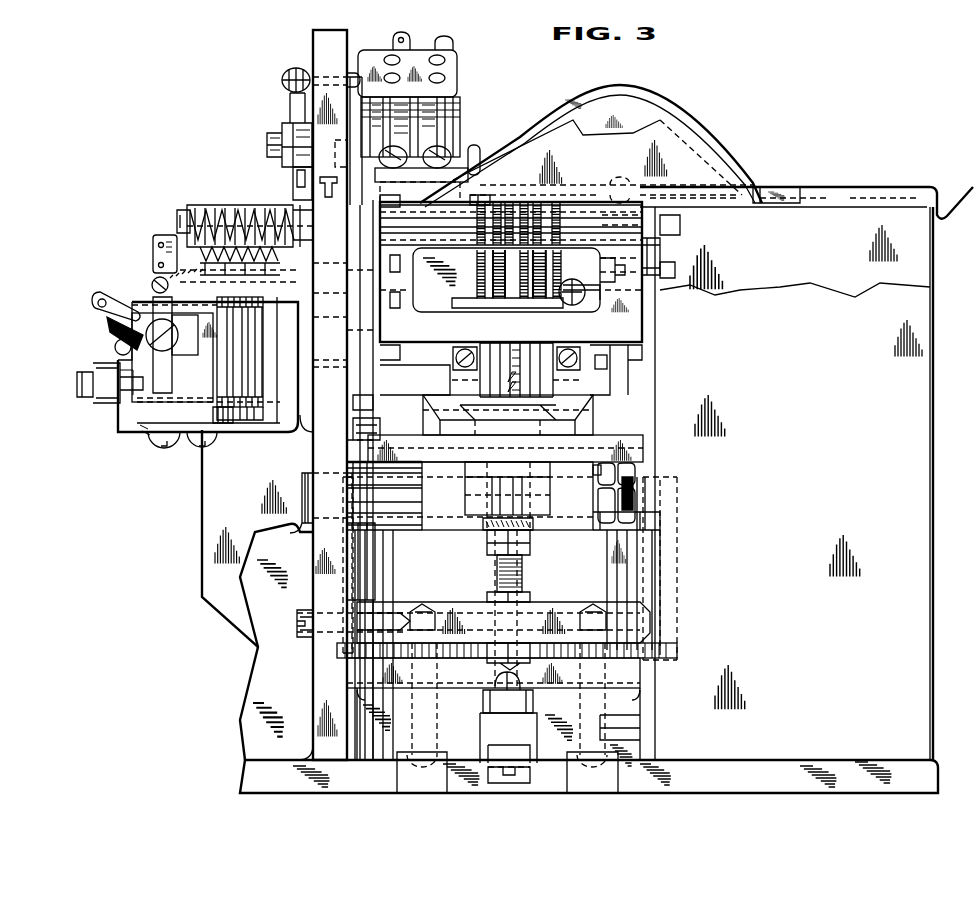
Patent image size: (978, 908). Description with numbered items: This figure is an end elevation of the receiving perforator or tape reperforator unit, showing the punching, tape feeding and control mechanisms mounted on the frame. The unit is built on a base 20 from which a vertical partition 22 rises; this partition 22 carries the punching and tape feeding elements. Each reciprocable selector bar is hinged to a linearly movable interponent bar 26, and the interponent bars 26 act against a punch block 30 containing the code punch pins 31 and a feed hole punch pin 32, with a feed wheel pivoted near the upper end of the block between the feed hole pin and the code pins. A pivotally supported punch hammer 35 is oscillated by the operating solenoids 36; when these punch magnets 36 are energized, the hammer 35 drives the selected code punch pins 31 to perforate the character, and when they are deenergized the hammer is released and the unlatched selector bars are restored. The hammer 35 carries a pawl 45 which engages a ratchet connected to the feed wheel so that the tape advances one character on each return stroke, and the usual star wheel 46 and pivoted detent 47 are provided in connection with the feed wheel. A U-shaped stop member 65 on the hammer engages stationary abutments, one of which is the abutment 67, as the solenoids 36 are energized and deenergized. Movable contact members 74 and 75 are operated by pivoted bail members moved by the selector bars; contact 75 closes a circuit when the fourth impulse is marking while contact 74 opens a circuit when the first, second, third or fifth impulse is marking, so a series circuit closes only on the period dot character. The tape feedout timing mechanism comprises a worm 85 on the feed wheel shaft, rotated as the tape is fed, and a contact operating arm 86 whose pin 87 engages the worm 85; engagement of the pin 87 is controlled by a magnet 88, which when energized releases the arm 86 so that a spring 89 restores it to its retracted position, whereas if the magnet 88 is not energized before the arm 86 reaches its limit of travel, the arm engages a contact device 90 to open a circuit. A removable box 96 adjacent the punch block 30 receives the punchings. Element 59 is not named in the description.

The base 20 is at (738, 784).
The partition 22 is at (321, 681).
The interponent bar 26 is at (563, 386).
The punch block 30 is at (644, 325).
The code punch pins 31 is at (544, 342).
The feed hole punch pin 32 is at (486, 342).
The punch hammer 35 is at (595, 417).
The operating solenoids 36 is at (342, 577).
The pawl 45 is at (374, 382).
The star wheel 46 is at (299, 201).
The pivoted detent 47 is at (288, 105).
The screw 59 is at (589, 280).
The U-shaped stop member 65 is at (552, 500).
The stationary abutment 67 is at (533, 527).
The movable contact member 74 is at (421, 17).
The movable contact member 75 is at (458, 13).
The worm 85 is at (250, 198).
The contact operating arm 86 is at (206, 328).
The pin 87 is at (212, 332).
The magnet 88 is at (262, 388).
The spring 89 is at (254, 275).
The contact device 90 is at (150, 252).
The removable box 96 is at (935, 265).